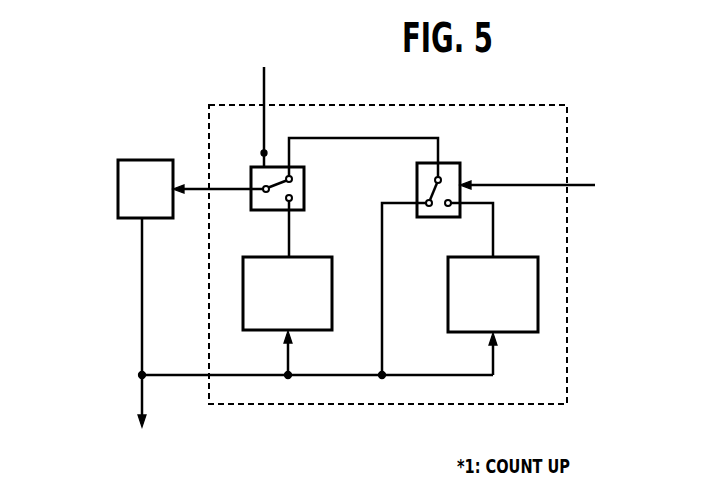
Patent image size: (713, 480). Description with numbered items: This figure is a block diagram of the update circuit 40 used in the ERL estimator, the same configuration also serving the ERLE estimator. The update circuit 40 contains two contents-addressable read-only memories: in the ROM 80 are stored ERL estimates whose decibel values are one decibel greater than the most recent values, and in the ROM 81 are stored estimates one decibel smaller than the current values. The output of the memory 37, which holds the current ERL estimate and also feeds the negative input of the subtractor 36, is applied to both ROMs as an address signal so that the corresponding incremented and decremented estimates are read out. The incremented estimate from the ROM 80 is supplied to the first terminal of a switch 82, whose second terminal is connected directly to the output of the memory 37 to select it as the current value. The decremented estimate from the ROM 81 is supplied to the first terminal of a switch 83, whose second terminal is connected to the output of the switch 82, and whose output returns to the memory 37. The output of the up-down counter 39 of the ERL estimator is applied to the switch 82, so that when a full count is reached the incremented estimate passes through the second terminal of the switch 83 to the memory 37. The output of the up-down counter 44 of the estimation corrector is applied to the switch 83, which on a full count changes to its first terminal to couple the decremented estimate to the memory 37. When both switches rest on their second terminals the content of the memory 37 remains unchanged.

The memory 37 is at (143, 160).
The up-down counter 44 is at (248, 99).
The up-down counter 39 is at (576, 183).
The subtractor 36 is at (159, 349).
The update circuit 40 is at (388, 240).
The ROM 80 is at (512, 257).
The ROM 81 is at (332, 263).
The switch 82 is at (460, 173).
The switch 83 is at (304, 186).